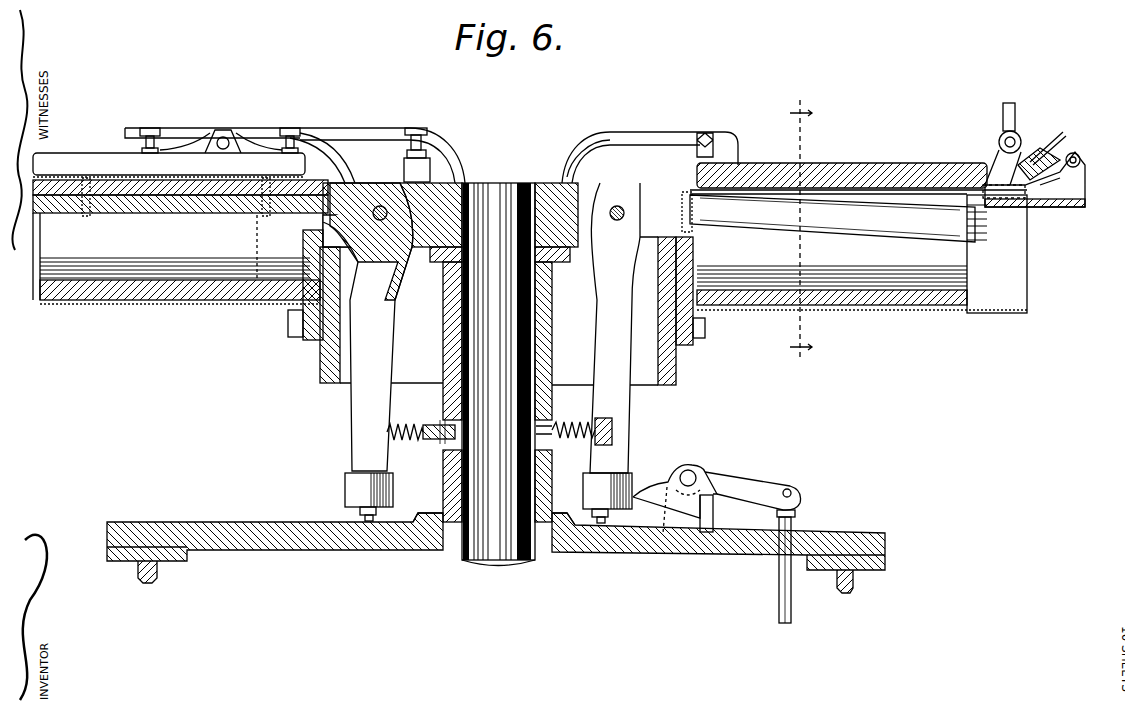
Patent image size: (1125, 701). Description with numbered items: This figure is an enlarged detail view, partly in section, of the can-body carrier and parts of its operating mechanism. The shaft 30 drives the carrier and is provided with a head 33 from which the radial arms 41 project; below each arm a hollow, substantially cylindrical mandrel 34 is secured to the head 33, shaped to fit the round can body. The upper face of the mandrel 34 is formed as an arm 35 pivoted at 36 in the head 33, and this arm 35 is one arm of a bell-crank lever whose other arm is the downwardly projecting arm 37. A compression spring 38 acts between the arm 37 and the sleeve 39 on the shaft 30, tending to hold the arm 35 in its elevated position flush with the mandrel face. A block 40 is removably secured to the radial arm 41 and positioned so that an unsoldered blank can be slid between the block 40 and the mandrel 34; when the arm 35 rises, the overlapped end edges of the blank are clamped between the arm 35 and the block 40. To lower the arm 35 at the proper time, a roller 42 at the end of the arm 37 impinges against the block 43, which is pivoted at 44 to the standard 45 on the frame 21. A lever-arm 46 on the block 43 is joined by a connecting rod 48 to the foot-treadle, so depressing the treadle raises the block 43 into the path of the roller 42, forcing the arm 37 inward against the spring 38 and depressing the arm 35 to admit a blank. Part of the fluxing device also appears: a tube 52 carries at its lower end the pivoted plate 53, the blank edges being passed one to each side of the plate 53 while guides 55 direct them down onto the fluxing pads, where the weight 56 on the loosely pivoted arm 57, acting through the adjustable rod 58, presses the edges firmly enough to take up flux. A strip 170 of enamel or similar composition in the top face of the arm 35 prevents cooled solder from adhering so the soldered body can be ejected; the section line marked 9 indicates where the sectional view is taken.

The section line 9 is at (797, 230).
The frame 21 is at (378, 547).
The shaft 30 is at (495, 197).
The head 33 is at (562, 178).
The mandrel 34 is at (180, 293).
The arm 35 is at (153, 207).
The pivot 36 is at (390, 200).
The downwardly projecting arm 37 is at (365, 395).
The compression spring 38 is at (407, 437).
The sleeve 39 is at (556, 328).
The block 40 is at (83, 157).
The radial arm 41 is at (262, 132).
The roller 42 is at (360, 487).
The block 43 is at (657, 502).
The pivot 44 is at (695, 477).
The standard 45 is at (705, 518).
The lever-arm 46 is at (757, 485).
The connecting rod 48 is at (793, 522).
The tube 52 is at (1015, 127).
The plate 53 is at (1075, 183).
The guides 55 is at (1060, 180).
The weight 56 is at (1033, 155).
The loosely pivoted arm 57 is at (1065, 150).
The adjustable rod 58 is at (1000, 183).
The strip of enamel 170 is at (120, 187).